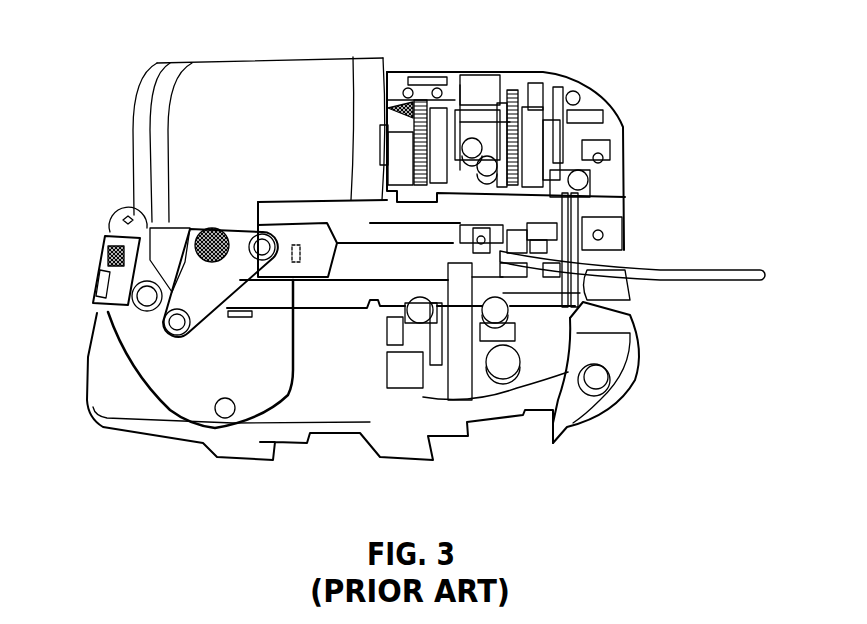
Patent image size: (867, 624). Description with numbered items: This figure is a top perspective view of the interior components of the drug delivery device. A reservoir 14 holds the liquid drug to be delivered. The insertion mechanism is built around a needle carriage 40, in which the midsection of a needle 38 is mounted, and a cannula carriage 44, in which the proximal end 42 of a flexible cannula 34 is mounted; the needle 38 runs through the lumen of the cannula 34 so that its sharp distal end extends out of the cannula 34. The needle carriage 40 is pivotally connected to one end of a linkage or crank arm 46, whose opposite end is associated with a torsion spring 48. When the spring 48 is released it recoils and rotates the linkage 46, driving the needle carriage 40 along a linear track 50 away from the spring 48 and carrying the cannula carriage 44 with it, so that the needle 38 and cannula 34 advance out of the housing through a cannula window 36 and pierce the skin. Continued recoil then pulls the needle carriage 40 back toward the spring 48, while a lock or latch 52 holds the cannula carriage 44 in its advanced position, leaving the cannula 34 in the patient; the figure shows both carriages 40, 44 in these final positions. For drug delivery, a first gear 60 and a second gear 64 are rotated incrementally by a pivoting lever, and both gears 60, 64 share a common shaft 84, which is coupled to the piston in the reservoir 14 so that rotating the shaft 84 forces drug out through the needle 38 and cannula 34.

The reservoir 14 is at (223, 93).
The needle carriage 40 is at (298, 232).
The first gear 60 is at (422, 100).
The common shaft 84 is at (482, 133).
The second gear 64 is at (513, 100).
The torsion spring 48 is at (207, 232).
The linkage or crank arm 46 is at (185, 277).
The cannula carriage 44 is at (497, 227).
The cannula 34 is at (723, 270).
The cannula window 36 is at (615, 305).
The needle 38 is at (278, 395).
The linear track 50 is at (420, 282).
The lock or latch 52 is at (453, 363).
The proximal end of the cannula 42 is at (483, 250).